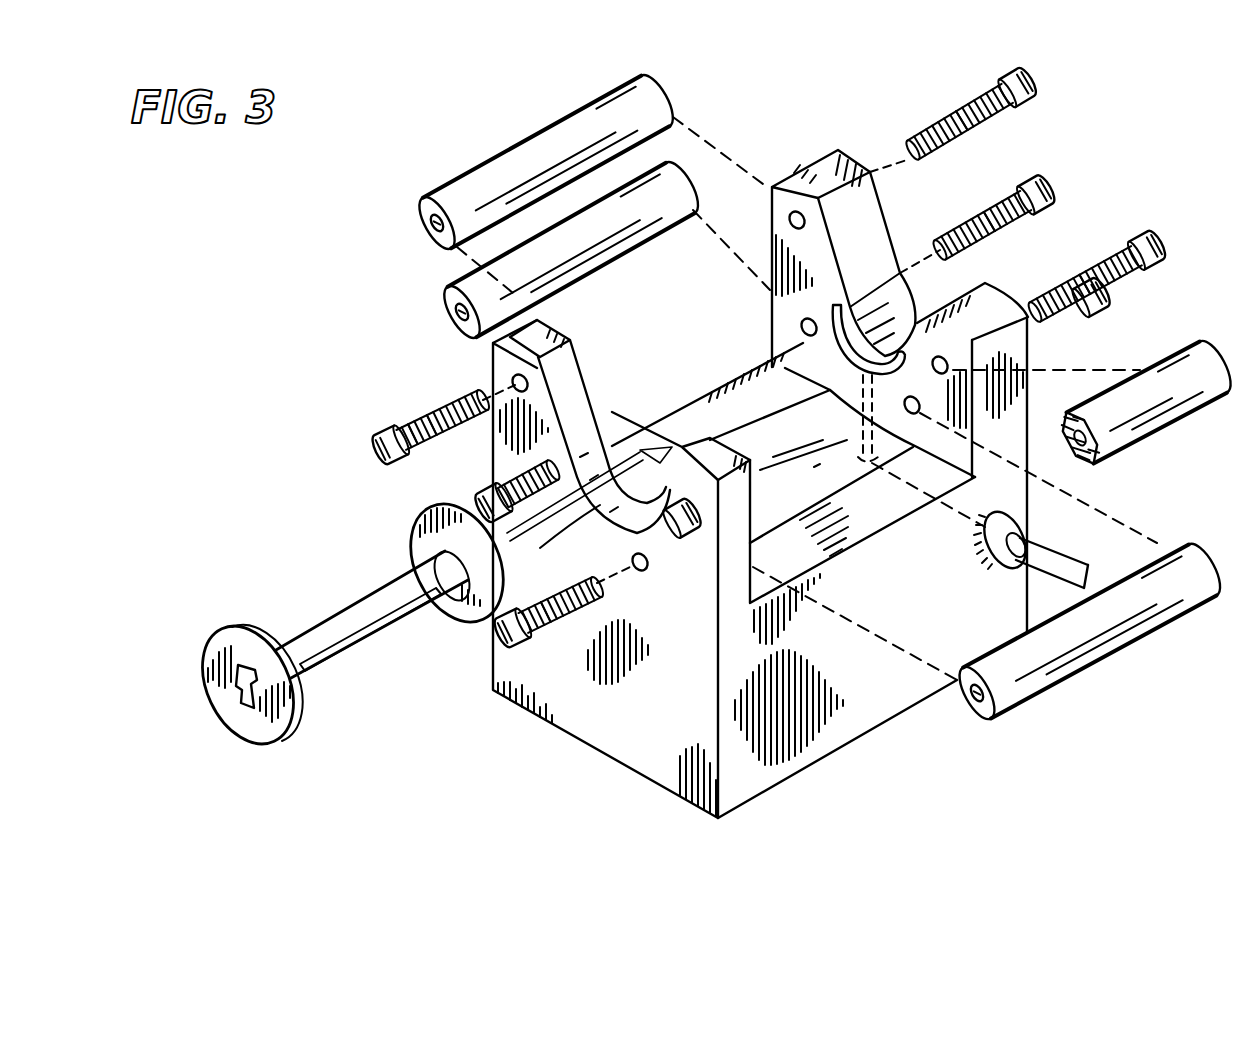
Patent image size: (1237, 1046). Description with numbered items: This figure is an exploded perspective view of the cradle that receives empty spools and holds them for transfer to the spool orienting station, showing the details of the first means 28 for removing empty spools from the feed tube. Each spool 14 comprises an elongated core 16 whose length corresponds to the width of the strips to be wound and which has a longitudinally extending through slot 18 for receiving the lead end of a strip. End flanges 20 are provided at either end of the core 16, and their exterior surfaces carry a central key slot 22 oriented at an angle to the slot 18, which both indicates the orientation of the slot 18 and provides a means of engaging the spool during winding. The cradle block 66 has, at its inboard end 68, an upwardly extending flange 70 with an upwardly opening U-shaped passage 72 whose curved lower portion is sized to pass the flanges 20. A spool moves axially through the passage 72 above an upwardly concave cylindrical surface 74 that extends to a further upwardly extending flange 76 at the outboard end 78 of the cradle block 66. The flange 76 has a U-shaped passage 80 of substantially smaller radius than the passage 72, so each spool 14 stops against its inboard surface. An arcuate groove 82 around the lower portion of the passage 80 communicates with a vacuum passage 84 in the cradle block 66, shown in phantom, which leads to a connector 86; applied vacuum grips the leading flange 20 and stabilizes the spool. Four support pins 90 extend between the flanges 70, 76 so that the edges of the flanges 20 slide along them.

The spool 14 is at (313, 607).
The core 16 is at (383, 590).
The through slot 18 is at (386, 628).
The end flange 20 is at (470, 613).
The key slot 22 is at (237, 692).
The first means 28 is at (1087, 167).
The cradle block 66 is at (868, 728).
The inboard end 68 is at (635, 758).
The flange 70 is at (567, 331).
The U-shaped passage 72 is at (546, 575).
The cylindrical surface 74 is at (778, 457).
The flange 76 is at (847, 157).
The outboard end 78 is at (1028, 493).
The U-shaped passage 80 is at (877, 268).
The arcuate groove 82 is at (840, 350).
The vacuum passage 84 is at (953, 521).
The connector 86 is at (1003, 570).
The support pin 90 is at (538, 137).